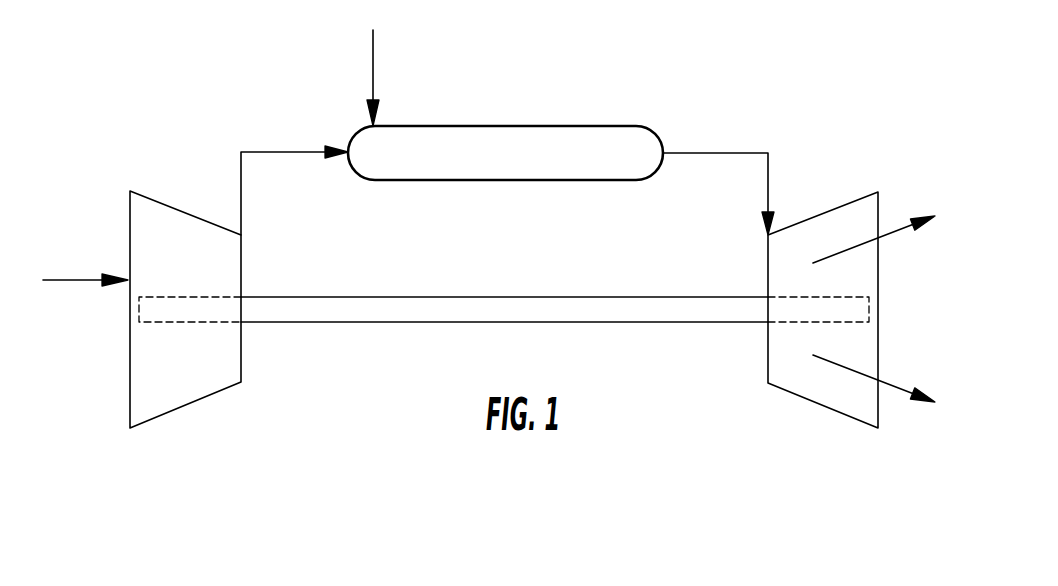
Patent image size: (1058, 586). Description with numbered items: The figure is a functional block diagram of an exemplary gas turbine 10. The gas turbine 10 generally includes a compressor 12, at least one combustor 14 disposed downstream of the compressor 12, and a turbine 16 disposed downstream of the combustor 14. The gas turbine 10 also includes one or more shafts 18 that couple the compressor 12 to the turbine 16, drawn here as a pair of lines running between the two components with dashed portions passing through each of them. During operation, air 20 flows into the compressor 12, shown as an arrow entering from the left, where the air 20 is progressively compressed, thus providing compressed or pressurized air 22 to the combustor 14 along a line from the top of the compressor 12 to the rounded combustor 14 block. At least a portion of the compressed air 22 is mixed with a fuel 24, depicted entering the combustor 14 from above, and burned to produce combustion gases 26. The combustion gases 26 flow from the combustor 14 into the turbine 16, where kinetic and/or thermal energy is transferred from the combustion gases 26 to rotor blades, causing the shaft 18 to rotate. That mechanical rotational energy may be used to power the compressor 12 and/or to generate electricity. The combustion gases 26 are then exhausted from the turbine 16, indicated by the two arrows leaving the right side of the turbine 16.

The gas turbine 10 is at (243, 57).
The compressor 12 is at (163, 200).
The combustor 14 is at (600, 127).
The turbine 16 is at (843, 204).
The shaft 18 is at (445, 322).
The air 20 is at (90, 278).
The compressed air 22 is at (292, 152).
The fuel 24 is at (378, 78).
The combustion gases 26 is at (712, 152).